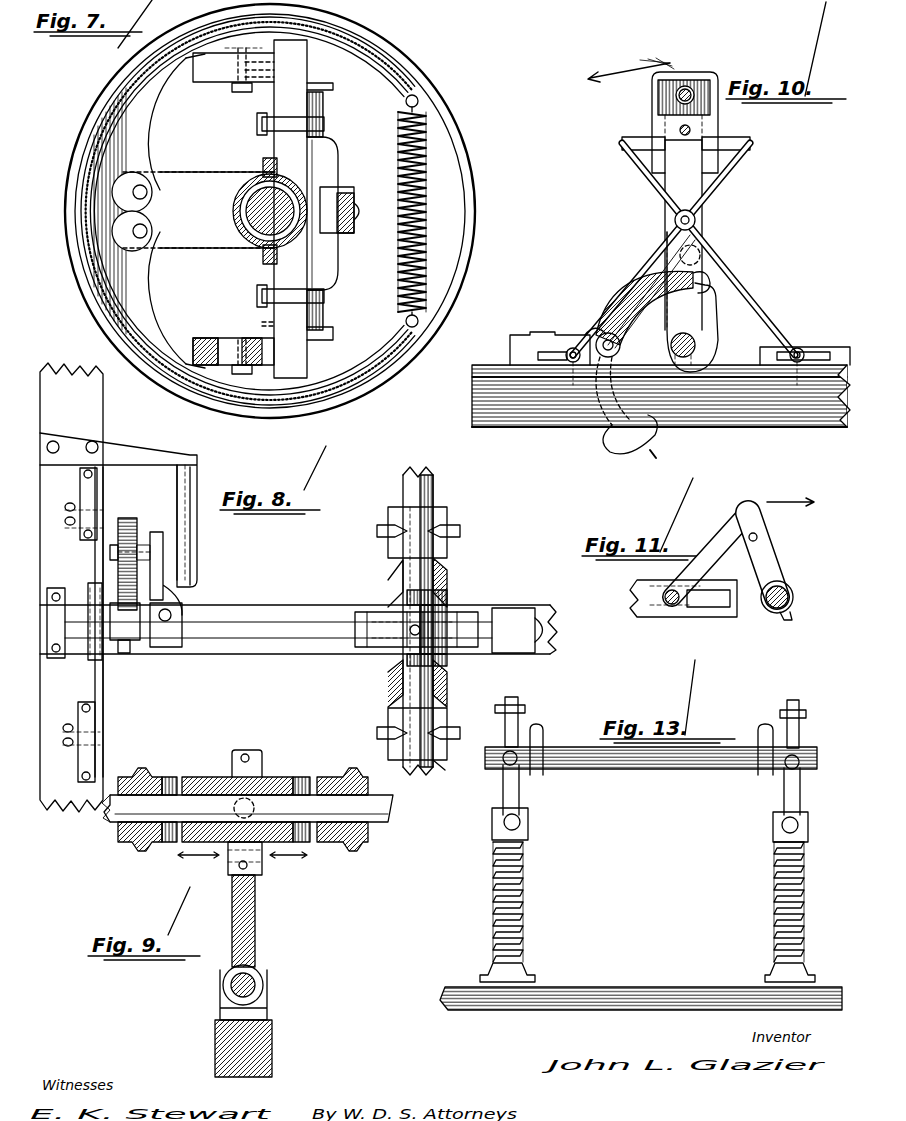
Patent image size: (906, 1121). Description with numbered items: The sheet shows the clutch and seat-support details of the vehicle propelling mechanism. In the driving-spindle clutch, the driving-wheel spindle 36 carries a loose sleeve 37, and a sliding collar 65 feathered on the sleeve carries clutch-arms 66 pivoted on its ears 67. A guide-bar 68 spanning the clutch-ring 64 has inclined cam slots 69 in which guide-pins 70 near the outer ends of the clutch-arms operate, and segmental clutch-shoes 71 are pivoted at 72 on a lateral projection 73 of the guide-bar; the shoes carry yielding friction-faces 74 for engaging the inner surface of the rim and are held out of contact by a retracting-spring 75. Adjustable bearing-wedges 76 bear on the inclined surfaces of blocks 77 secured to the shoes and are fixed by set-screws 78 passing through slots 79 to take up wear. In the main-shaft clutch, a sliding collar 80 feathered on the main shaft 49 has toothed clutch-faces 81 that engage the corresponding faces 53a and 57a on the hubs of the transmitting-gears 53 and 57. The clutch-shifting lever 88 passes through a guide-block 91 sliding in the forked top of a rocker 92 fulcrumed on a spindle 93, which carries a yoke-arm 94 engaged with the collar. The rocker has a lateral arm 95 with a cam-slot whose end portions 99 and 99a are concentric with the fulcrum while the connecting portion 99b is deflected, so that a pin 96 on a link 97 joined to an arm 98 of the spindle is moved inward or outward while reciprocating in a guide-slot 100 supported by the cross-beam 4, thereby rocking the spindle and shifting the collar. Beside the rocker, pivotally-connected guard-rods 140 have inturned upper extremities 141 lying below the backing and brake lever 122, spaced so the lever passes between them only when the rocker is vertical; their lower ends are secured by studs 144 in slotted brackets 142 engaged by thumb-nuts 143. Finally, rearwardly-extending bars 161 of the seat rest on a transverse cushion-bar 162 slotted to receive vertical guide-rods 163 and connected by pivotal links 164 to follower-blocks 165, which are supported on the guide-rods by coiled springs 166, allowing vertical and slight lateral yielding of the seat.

In FIG. 8, the cross-beam 4 is at (88, 418).
In FIG. 10, the cross-beam 4 is at (760, 414).
In FIG. 13, the cross-beam 4 is at (641, 998).
In FIG. 7, the driving-wheel spindle 36 is at (248, 238).
In FIG. 7, the loose sleeve 37 is at (262, 172).
In FIG. 8, the main shaft 49 is at (430, 500).
In FIG. 9, the main shaft 49 is at (392, 812).
In FIG. 8, the transmitting-gear 53 is at (388, 730).
In FIG. 9, the transmitting-gear 53 is at (350, 770).
In FIG. 8, the clutch-face 53a is at (442, 763).
In FIG. 9, the clutch-face 53a is at (366, 845).
In FIG. 8, the transmitting-gear 57 is at (447, 520).
In FIG. 9, the transmitting-gear 57 is at (138, 851).
In FIG. 8, the clutch-face 57a is at (388, 560).
In FIG. 9, the clutch-face 57a is at (150, 775).
In FIG. 7, the clutch-ring 64 is at (470, 160).
In FIG. 7, the sliding collar 65 is at (262, 255).
In FIG. 7, the clutch-arms 66 is at (335, 170).
In FIG. 7, the ears 67 is at (354, 198).
In FIG. 7, the guide-bar 68 is at (273, 320).
In FIG. 7, the cam slots 69 is at (324, 130).
In FIG. 7, the guide-pins 70 is at (326, 124).
In FIG. 7, the clutch-shoes 71 is at (136, 115).
In FIG. 7, the pivot 72 is at (147, 229).
In FIG. 7, the lateral projection 73 is at (165, 250).
In FIG. 7, the friction-faces 74 is at (396, 50).
In FIG. 7, the retracting-spring 75 is at (426, 248).
In FIG. 7, the bearing-wedges 76 is at (262, 85).
In FIG. 7, the blocks 77 is at (308, 209).
In FIG. 7, the set-screws 78 is at (234, 88).
In FIG. 7, the slots 79 is at (228, 342).
In FIG. 8, the sliding collar 80 is at (446, 600).
In FIG. 9, the sliding collar 80 is at (275, 778).
In FIG. 8, the clutch-faces 81 is at (446, 572).
In FIG. 9, the clutch-faces 81 is at (190, 777).
In FIG. 10, the clutch-shifting lever 88 is at (688, 86).
In FIG. 8, the guide-block 91 is at (160, 648).
In FIG. 10, the guide-block 91 is at (718, 108).
In FIG. 8, the rocker 92 is at (124, 654).
In FIG. 10, the rocker 92 is at (703, 183).
In FIG. 8, the spindle 93 is at (270, 610).
In FIG. 9, the spindle 93 is at (264, 990).
In FIG. 10, the spindle 93 is at (688, 355).
In FIG. 11, the spindle 93 is at (790, 585).
In FIG. 8, the yoke-arm 94 is at (365, 650).
In FIG. 9, the yoke-arm 94 is at (256, 918).
In FIG. 8, the lateral arm 95 is at (130, 522).
In FIG. 10, the lateral arm 95 is at (653, 455).
In FIG. 8, the pin 96 is at (110, 552).
In FIG. 10, the pin 96 is at (614, 353).
In FIG. 11, the pin 96 is at (670, 605).
In FIG. 8, the link 97 is at (170, 573).
In FIG. 10, the link 97 is at (655, 275).
In FIG. 11, the link 97 is at (725, 530).
In FIG. 8, the arm 98 is at (168, 648).
In FIG. 10, the arm 98 is at (716, 310).
In FIG. 11, the arm 98 is at (770, 548).
In FIG. 10, the terminal portion of cam-slot 99 is at (658, 432).
In FIG. 10, the terminal portion of cam-slot 99a is at (712, 278).
In FIG. 10, the connecting portion of cam-slot 99b is at (592, 330).
In FIG. 8, the guide-slot 100 is at (198, 525).
In FIG. 10, the guide-slot 100 is at (655, 292).
In FIG. 11, the guide-slot 100 is at (715, 605).
In FIG. 10, the backing and brake lever 122 is at (691, 130).
In FIG. 8, the guard-rods 140 is at (104, 505).
In FIG. 10, the guard-rods 140 is at (642, 158).
In FIG. 8, the inturned upper extremities 141 is at (98, 648).
In FIG. 10, the inturned upper extremities 141 is at (648, 137).
In FIG. 8, the slotted brackets 142 is at (80, 493).
In FIG. 10, the slotted brackets 142 is at (548, 366).
In FIG. 8, the thumb-nuts 143 is at (67, 524).
In FIG. 10, the thumb-nuts 143 is at (566, 348).
In FIG. 10, the studs 144 is at (572, 368).
In FIG. 13, the rearwardly-extending bars 161 is at (545, 745).
In FIG. 13, the cushion-bar 162 is at (685, 765).
In FIG. 13, the guide-rods 163 is at (520, 720).
In FIG. 13, the pivotal links 164 is at (503, 785).
In FIG. 13, the follower-blocks 165 is at (528, 828).
In FIG. 13, the springs 166 is at (525, 900).